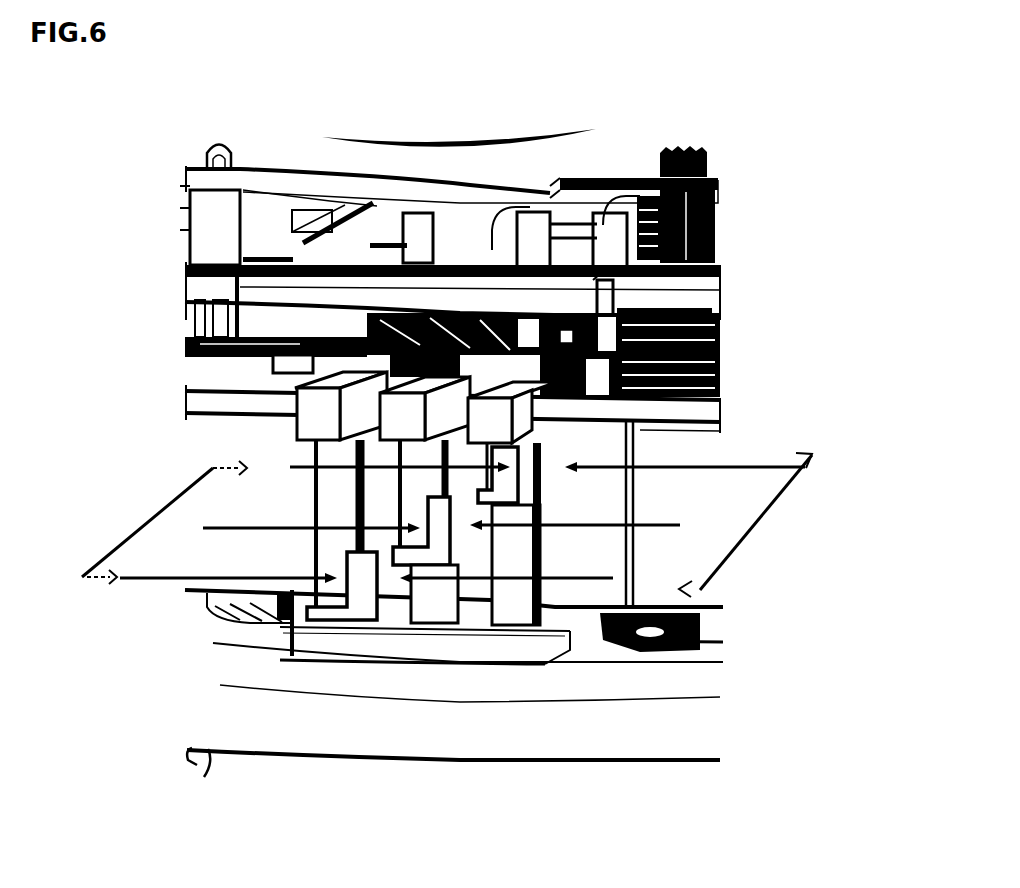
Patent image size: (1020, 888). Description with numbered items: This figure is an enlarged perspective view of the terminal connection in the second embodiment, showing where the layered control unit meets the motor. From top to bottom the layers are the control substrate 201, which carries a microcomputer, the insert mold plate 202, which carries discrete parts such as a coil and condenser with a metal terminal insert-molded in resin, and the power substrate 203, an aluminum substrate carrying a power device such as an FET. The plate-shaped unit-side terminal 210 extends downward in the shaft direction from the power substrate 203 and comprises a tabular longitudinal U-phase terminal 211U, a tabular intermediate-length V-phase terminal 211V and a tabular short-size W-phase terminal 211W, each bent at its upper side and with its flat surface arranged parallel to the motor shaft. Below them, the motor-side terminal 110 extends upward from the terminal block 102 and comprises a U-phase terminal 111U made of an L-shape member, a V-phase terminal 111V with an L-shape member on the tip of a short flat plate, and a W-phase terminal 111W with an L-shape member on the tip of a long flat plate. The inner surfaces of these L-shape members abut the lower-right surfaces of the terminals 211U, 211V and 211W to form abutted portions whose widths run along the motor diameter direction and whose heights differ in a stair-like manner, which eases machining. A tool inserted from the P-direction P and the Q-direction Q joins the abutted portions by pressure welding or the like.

The control substrate 201 is at (606, 175).
The insert mold plate 202 is at (697, 290).
The power substrate 203 is at (712, 402).
The unit-side terminal 210 is at (230, 430).
The U-phase terminal 211U is at (337, 490).
The V-phase terminal 211V is at (400, 493).
The W-phase terminal 211W is at (507, 477).
The motor-side terminal 110 is at (600, 555).
The U-phase terminal 111U is at (368, 603).
The V-phase terminal 111V is at (420, 600).
The W-phase terminal 111W is at (510, 598).
The terminal block 102 is at (503, 662).
The P-direction P is at (757, 523).
The Q-direction Q is at (140, 524).